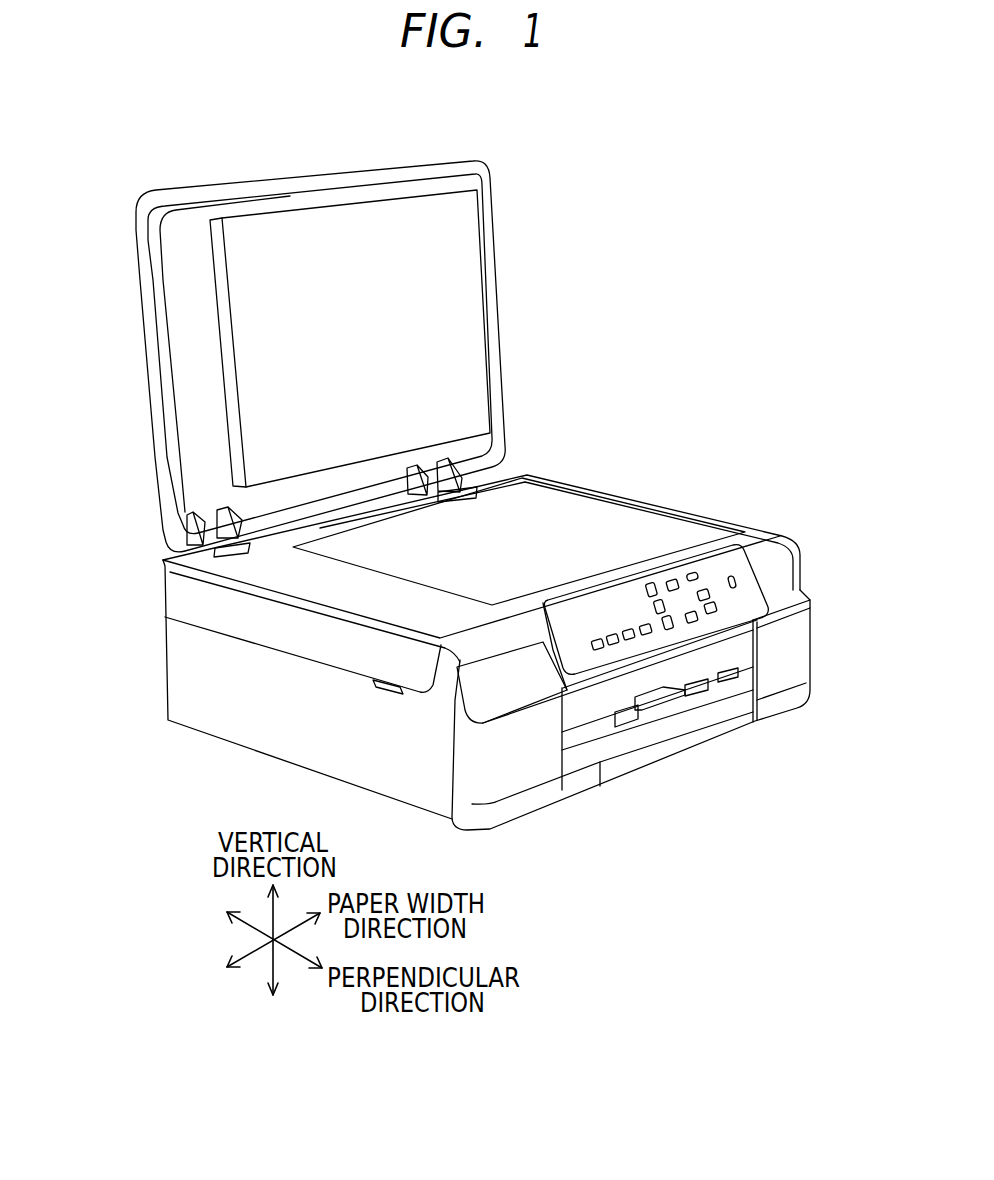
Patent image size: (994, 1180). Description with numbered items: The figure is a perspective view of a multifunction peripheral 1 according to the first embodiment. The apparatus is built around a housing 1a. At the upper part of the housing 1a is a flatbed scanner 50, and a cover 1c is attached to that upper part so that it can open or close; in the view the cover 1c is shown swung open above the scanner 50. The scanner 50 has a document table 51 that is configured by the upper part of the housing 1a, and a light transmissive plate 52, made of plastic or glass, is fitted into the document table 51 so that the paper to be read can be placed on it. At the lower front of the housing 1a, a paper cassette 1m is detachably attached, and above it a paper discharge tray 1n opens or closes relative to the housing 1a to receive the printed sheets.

The multifunction peripheral 1 is at (638, 223).
The housing 1a is at (796, 640).
The cover 1c is at (152, 355).
The paper cassette 1m is at (667, 727).
The paper discharge tray 1n is at (708, 698).
The flatbed scanner 50 is at (606, 483).
The document table 51 is at (730, 528).
The light transmissive plate 52 is at (652, 521).